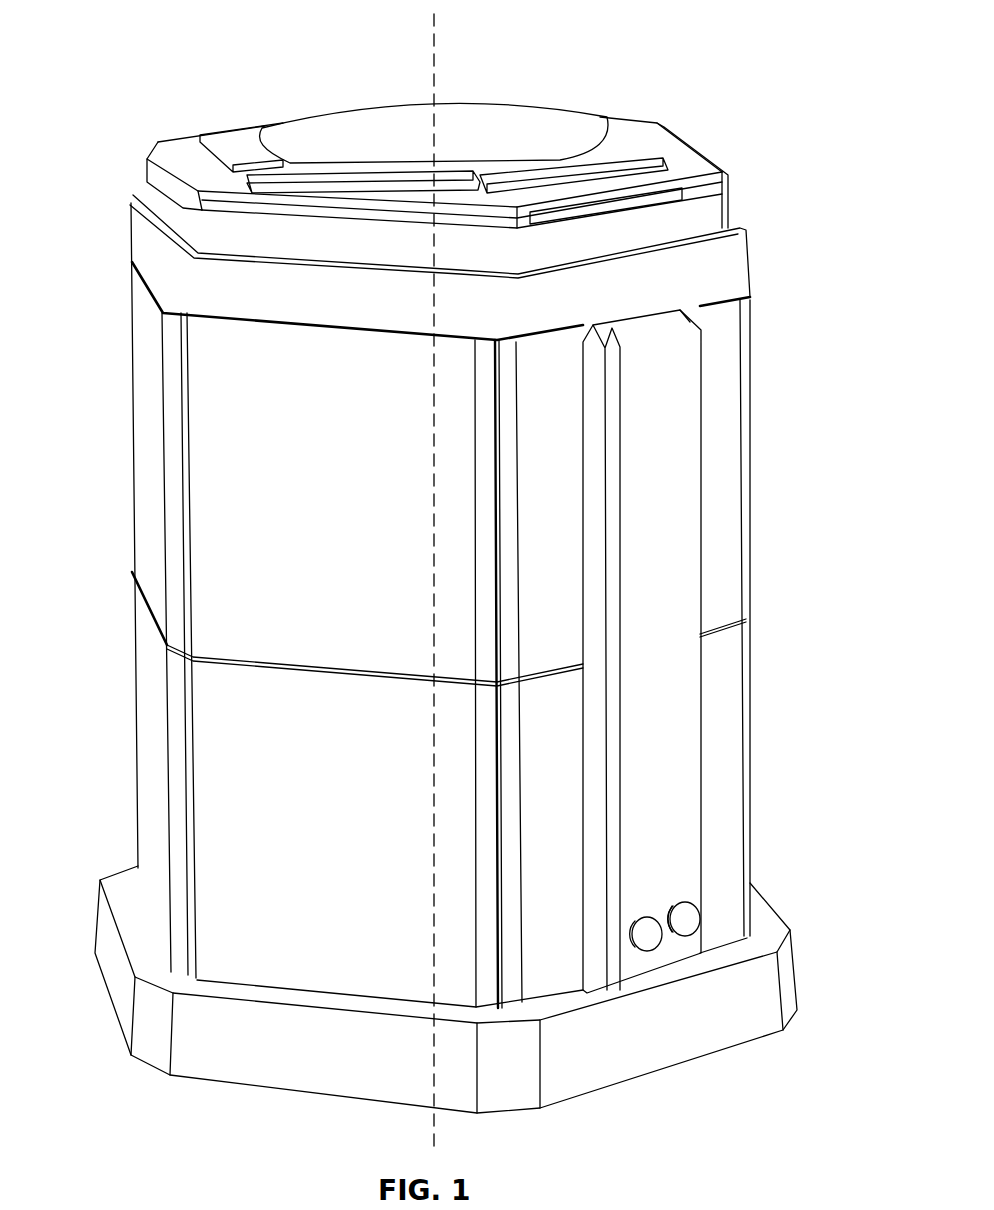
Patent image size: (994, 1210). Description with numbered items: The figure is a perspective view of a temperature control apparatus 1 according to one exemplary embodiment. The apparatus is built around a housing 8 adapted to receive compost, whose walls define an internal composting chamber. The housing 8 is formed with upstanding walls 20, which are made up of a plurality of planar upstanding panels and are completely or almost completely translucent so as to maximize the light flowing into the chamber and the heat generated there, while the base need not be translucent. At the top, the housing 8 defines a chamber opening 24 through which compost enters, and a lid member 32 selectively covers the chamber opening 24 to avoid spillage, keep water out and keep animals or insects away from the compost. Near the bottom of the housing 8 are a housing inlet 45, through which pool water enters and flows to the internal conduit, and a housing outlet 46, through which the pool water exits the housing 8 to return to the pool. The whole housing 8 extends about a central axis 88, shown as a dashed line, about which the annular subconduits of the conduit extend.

The temperature control apparatus 1 is at (440, 578).
The housing 8 is at (440, 654).
The upstanding walls 20 is at (741, 417).
The chamber opening 24 is at (422, 143).
The lid member 32 is at (513, 118).
The housing inlet 45 is at (645, 948).
The housing outlet 46 is at (695, 918).
The axis 88 is at (437, 72).